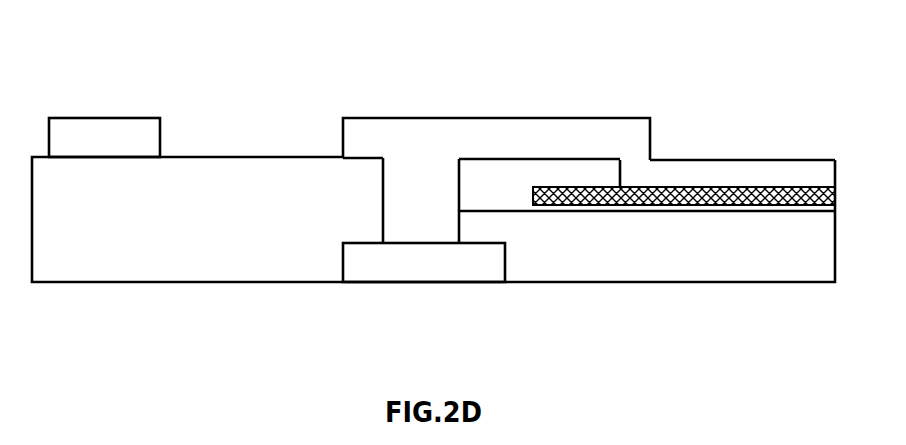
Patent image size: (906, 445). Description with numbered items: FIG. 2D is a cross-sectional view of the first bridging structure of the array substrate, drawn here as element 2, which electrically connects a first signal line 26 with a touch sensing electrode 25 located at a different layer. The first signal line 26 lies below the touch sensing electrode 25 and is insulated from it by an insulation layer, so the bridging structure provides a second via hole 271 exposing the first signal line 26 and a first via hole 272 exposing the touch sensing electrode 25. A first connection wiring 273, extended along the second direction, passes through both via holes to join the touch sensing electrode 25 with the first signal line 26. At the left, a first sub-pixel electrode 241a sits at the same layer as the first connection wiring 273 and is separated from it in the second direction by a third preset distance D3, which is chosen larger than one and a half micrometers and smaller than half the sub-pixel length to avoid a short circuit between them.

The substrate 2 is at (433, 219).
The first sub-pixel electrode 241a is at (105, 145).
The third preset distance D3 is at (163, 119).
The first connection wiring 273 is at (494, 133).
The second via hole 271 is at (408, 205).
The first via hole 272 is at (637, 178).
The touch sensing electrode 25 is at (720, 187).
The first signal line 26 is at (393, 263).